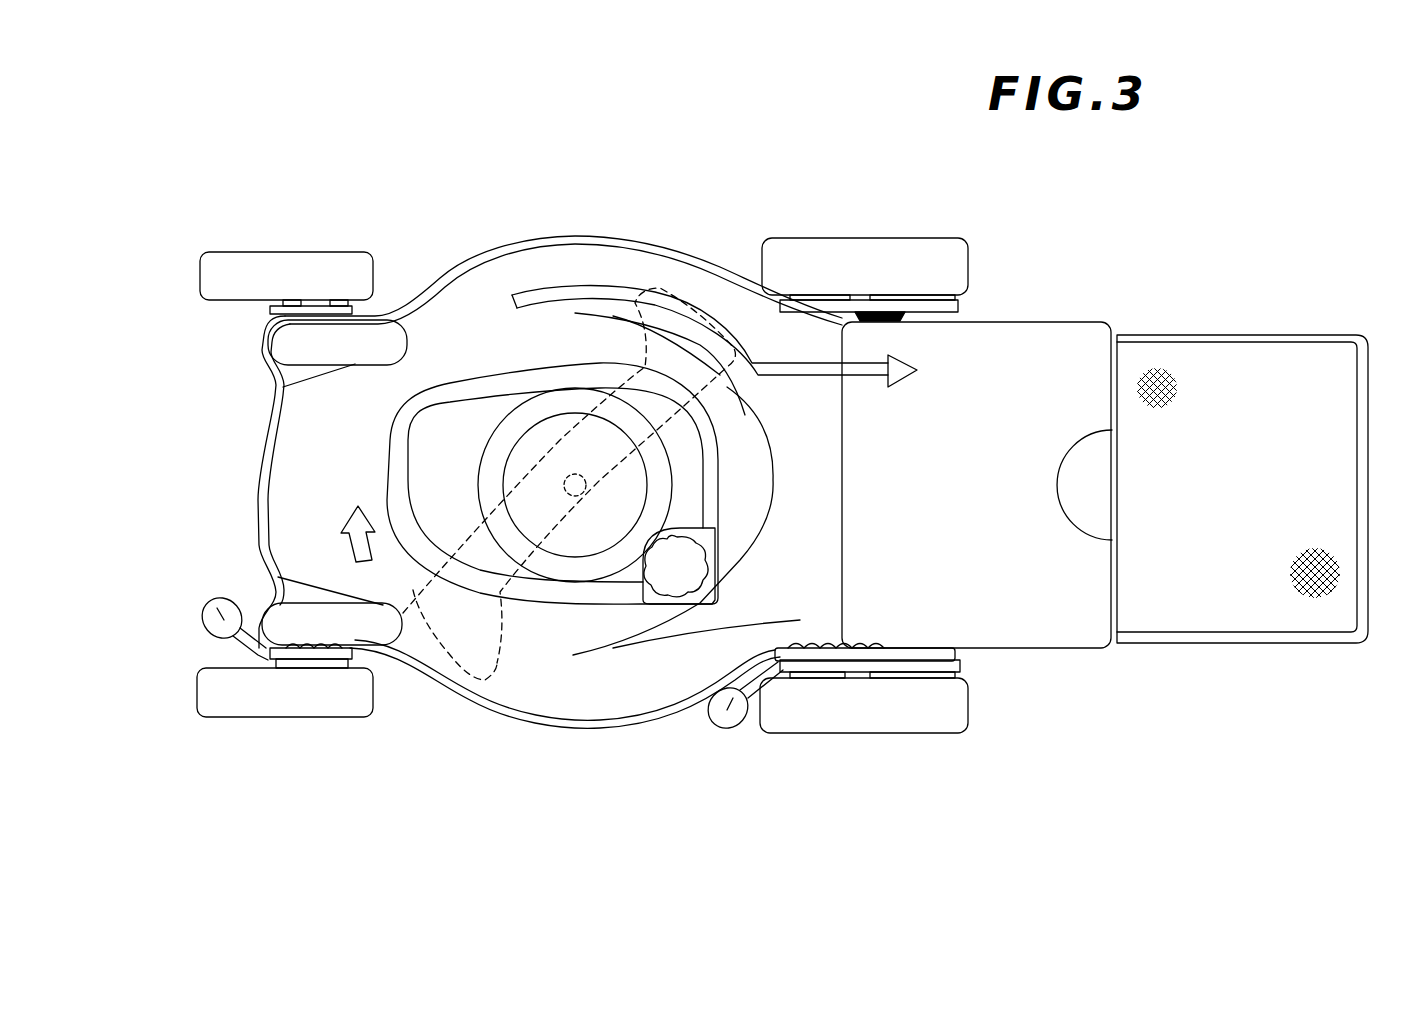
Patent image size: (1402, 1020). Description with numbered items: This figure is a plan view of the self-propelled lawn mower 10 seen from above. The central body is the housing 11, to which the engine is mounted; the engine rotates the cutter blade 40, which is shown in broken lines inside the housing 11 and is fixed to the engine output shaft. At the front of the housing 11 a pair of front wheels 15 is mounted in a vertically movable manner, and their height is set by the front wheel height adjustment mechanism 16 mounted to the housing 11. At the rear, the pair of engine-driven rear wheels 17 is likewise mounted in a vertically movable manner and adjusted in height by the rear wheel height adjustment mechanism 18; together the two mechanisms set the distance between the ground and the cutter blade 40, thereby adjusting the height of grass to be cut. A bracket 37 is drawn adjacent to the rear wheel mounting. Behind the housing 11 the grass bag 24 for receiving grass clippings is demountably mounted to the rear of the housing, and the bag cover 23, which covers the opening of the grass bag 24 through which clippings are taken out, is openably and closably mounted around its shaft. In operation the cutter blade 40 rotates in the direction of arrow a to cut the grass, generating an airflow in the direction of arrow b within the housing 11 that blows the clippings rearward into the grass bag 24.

The lawn mower 10 is at (417, 215).
The housing 11 is at (640, 233).
The front wheels 15 is at (245, 252).
The front wheel height adjustment mechanism 16 is at (200, 650).
The rear wheels 17 is at (862, 237).
The rear wheel height adjustment mechanism 18 is at (985, 672).
The bag cover 23 is at (1018, 322).
The grass bag 24 is at (1198, 335).
The bracket 37 is at (932, 652).
The cutter blade 40 is at (498, 668).